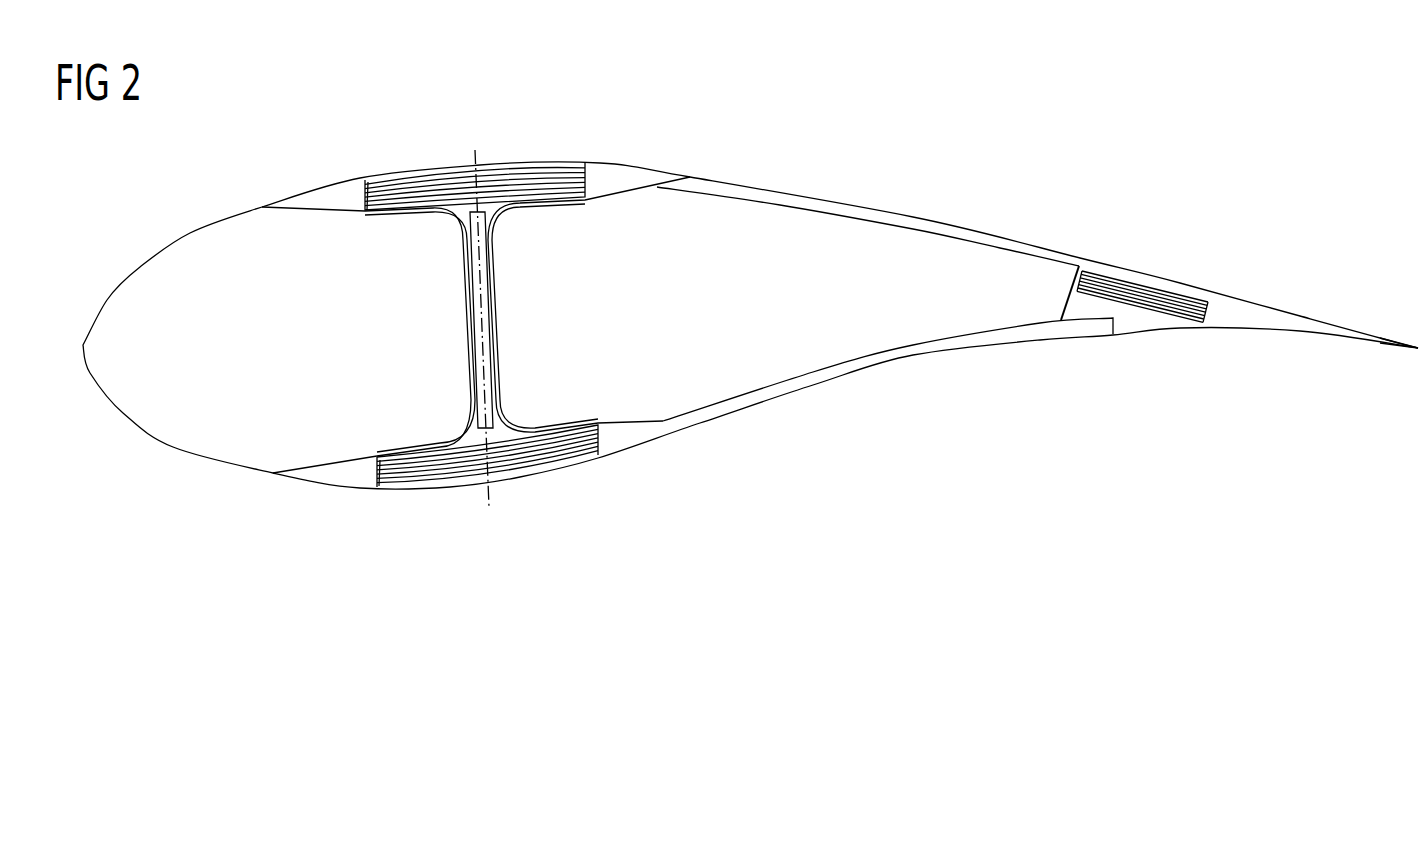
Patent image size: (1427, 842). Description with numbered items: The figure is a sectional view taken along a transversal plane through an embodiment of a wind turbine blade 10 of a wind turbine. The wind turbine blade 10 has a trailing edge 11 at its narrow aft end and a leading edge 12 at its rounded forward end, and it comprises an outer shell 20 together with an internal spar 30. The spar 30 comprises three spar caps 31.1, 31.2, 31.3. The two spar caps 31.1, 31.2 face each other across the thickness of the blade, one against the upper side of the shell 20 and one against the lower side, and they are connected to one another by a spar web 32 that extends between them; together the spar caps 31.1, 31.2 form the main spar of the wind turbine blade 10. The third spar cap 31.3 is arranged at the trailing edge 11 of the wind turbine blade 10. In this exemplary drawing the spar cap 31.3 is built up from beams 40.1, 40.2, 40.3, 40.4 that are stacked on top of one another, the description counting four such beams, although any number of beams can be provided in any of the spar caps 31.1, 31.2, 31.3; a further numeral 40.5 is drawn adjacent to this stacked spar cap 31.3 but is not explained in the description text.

The wind turbine blade 10 is at (950, 395).
The trailing edge 11 is at (1395, 328).
The leading edge 12 is at (72, 360).
The shell 20 is at (918, 218).
The spar 30 is at (383, 167).
The spar cap 31.1 is at (516, 163).
The spar cap 31.2 is at (440, 462).
The spar cap 31.3 is at (1097, 268).
The spar web 32 is at (467, 322).
The beam 40.1 is at (1150, 290).
The beam 40.2 is at (1200, 302).
The beam 40.3 is at (1088, 303).
The beam 40.4 is at (1137, 302).
The fifth layer of spar cap 40.5 is at (1195, 322).